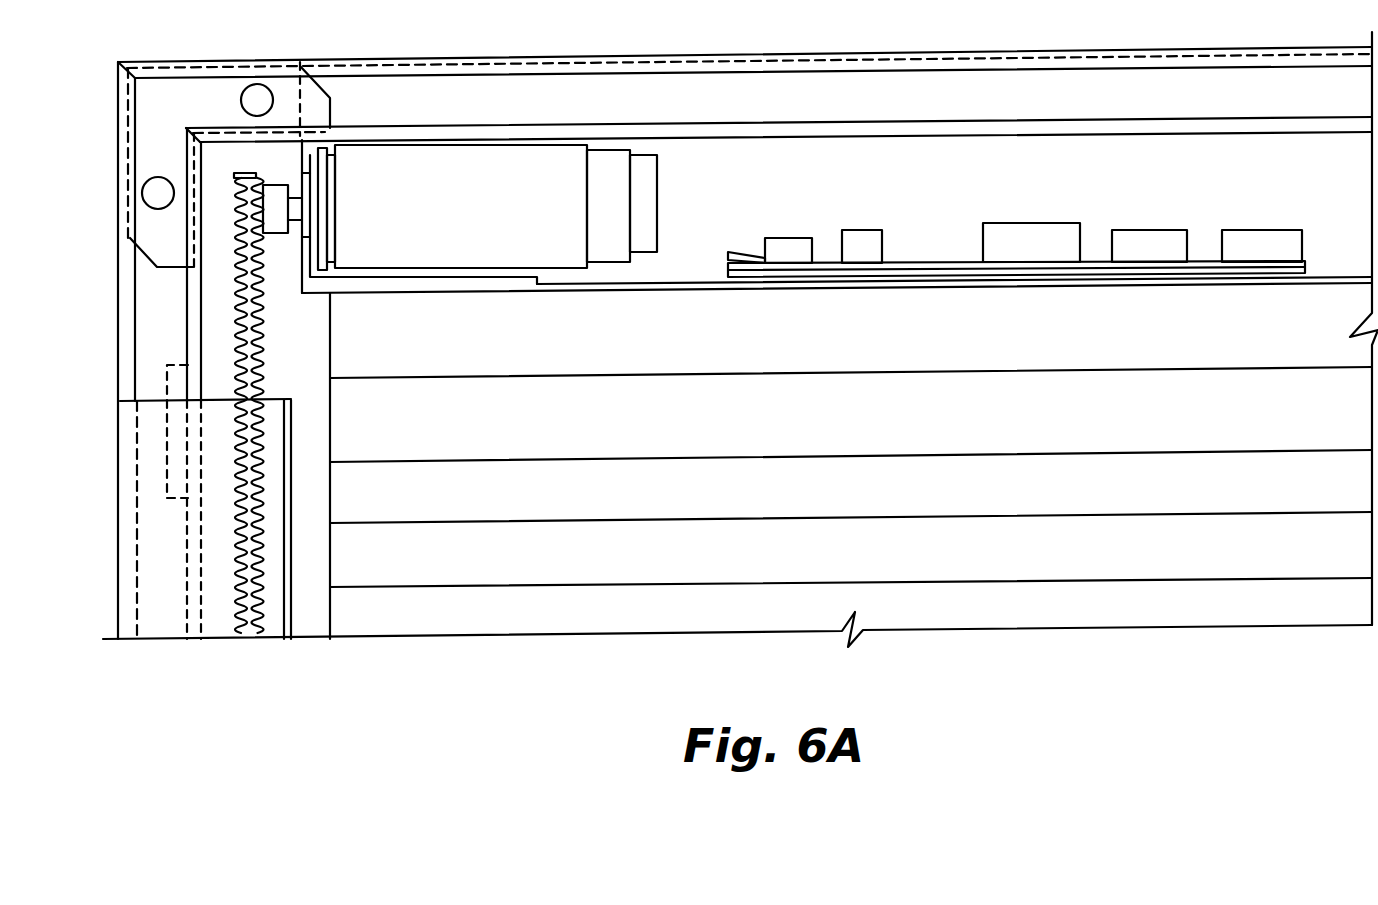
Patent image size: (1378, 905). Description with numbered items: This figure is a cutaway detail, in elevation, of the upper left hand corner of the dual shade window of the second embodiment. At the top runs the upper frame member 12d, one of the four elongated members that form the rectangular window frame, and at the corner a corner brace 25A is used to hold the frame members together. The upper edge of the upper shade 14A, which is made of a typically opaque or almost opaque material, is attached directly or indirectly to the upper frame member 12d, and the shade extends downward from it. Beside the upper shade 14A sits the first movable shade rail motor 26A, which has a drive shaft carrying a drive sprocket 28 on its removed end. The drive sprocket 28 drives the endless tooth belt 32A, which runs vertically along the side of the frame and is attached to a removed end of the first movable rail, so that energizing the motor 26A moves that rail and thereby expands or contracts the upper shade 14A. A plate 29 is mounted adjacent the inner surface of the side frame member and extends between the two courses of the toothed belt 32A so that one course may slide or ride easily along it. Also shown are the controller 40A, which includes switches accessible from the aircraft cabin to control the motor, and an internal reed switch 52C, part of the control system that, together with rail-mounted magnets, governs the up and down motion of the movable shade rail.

The upper frame member 12d is at (778, 55).
The corner brace 25A is at (192, 114).
The first movable shade rail motor 26A is at (462, 217).
The drive sprocket 28 is at (273, 235).
The endless tooth belt 32A is at (260, 338).
The internal reed switch 52C is at (172, 363).
The plate 29 is at (153, 470).
The upper shade 14A is at (747, 494).
The controller 40A is at (1210, 203).